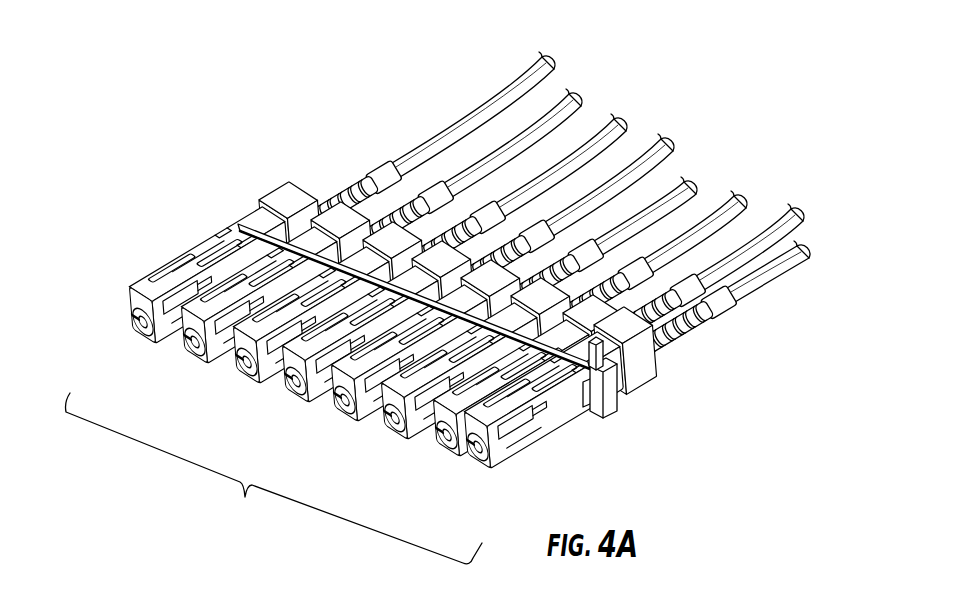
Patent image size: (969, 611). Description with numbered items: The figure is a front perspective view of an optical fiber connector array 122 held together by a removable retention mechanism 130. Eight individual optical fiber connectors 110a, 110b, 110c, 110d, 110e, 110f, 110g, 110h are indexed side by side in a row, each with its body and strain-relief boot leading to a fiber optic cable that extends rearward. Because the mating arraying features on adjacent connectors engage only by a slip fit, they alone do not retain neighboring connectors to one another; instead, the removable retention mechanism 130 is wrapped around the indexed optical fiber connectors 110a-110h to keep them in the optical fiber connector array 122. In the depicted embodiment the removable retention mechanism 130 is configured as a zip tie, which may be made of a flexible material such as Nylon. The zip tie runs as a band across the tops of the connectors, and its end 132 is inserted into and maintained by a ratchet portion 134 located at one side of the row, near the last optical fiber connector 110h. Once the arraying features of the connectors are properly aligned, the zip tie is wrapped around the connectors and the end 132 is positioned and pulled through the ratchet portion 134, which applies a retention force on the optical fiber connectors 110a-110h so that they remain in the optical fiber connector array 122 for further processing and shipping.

The optical fiber connector 110a is at (147, 358).
The optical fiber connector 110b is at (198, 370).
The optical fiber connector 110c is at (257, 388).
The optical fiber connector 110d is at (300, 410).
The optical fiber connector 110e is at (347, 428).
The optical fiber connector 110f is at (397, 443).
The optical fiber connector 110g is at (445, 460).
The optical fiber connector 110h is at (487, 480).
The optical fiber connector array 122 is at (274, 478).
The removable retention mechanism 130 is at (249, 218).
The end 132 is at (601, 350).
The ratchet portion 134 is at (610, 377).